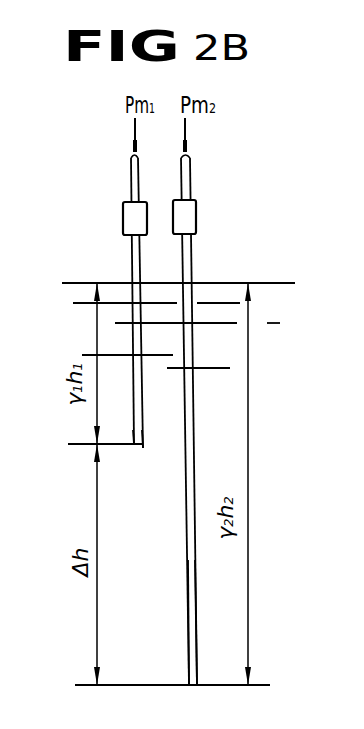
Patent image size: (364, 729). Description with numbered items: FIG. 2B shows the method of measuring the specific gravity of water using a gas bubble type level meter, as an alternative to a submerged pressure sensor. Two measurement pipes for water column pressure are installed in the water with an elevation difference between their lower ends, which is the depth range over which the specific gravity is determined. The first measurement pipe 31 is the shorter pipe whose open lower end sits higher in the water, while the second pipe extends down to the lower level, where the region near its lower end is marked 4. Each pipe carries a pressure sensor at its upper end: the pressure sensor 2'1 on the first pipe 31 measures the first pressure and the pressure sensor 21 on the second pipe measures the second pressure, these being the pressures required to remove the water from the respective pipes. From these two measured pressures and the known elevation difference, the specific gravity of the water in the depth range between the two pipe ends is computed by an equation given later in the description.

The pressure sensor 2'1 is at (103, 301).
The pressure sensor 21 is at (190, 222).
The measurement pipe for water column pressure 31 is at (140, 448).
The liquid column / vessel 4 is at (195, 598).